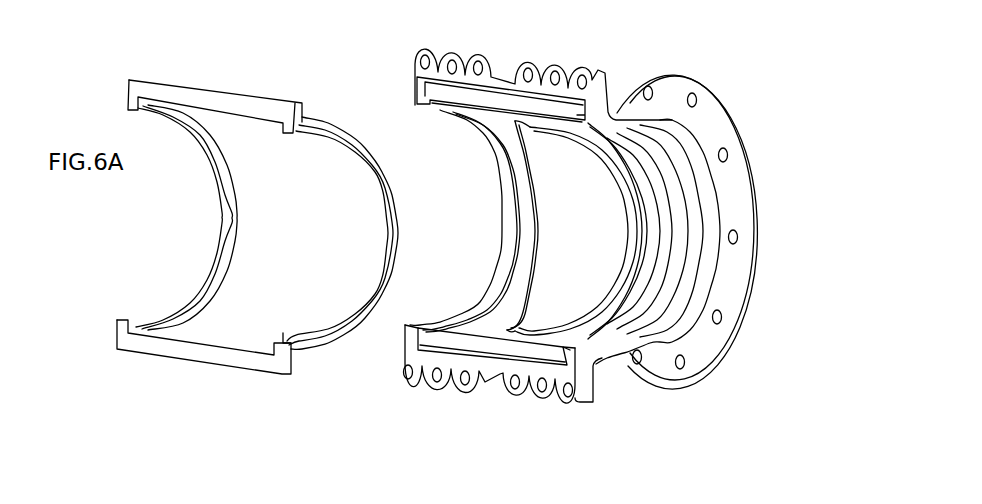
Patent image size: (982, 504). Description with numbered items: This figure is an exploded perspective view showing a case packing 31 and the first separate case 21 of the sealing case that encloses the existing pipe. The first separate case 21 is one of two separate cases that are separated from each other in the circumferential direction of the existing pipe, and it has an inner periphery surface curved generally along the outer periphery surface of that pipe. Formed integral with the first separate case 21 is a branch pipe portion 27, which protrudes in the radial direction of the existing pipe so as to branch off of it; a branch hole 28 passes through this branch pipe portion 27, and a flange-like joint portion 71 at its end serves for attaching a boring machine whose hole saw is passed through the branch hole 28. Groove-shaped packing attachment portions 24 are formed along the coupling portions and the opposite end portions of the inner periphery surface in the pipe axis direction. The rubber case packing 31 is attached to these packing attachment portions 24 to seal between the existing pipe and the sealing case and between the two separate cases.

The first separate case 21 is at (580, 403).
The packing attachment portion 24 is at (510, 101).
The branch pipe portion 27 is at (612, 112).
The branch hole 28 is at (543, 257).
The case packing 31 is at (197, 278).
The joint portion 71 is at (702, 345).